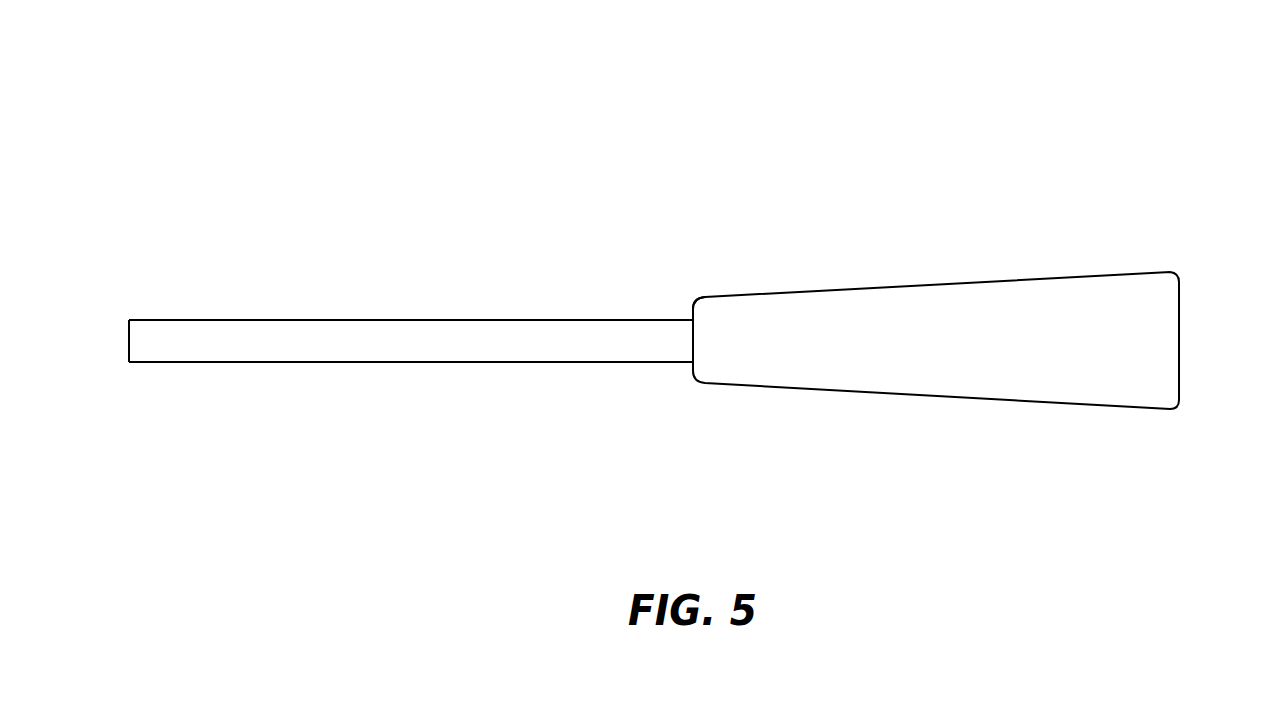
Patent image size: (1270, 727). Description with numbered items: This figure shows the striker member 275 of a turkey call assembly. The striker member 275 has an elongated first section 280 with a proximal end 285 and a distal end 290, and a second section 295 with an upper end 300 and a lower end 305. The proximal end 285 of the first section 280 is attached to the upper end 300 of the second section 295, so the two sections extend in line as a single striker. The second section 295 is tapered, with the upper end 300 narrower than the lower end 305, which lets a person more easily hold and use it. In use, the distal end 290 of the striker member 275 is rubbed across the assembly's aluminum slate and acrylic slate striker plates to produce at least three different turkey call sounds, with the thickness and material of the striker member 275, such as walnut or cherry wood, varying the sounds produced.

The striker member 275 is at (957, 101).
The first section 280 is at (364, 320).
The proximal end 285 is at (684, 330).
The distal end 290 is at (128, 339).
The second section 295 is at (903, 382).
The upper end 300 is at (702, 315).
The lower end 305 is at (1180, 330).